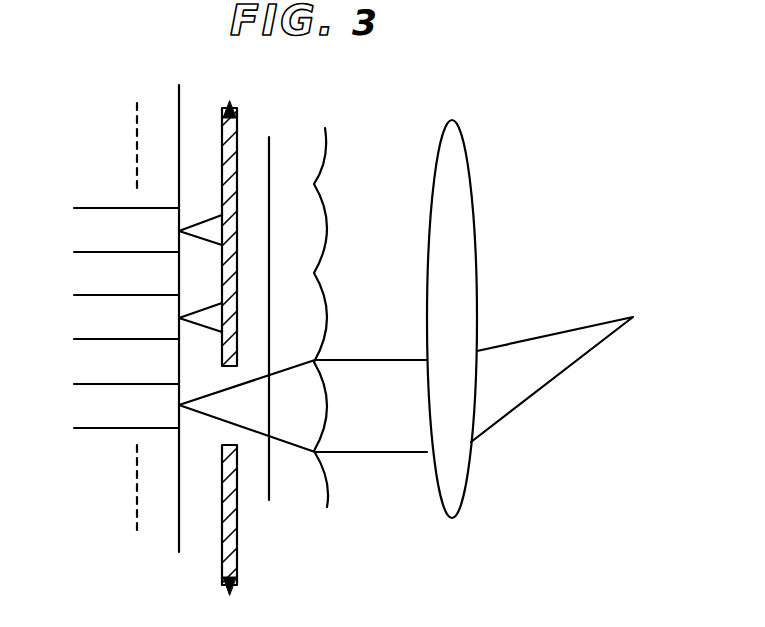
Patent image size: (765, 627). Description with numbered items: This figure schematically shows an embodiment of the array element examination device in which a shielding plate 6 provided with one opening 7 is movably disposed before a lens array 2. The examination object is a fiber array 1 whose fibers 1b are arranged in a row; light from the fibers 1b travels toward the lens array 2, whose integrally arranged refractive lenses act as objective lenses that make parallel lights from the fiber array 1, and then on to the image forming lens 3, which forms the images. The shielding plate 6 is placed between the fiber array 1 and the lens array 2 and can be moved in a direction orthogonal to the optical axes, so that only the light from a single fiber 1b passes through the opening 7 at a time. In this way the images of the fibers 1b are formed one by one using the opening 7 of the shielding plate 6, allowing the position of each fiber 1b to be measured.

The fiber array 1 is at (180, 128).
The fibers 1b is at (122, 217).
The lens array 2 is at (327, 148).
The image forming lens 3 is at (464, 157).
The shielding plate 6 is at (238, 137).
The opening 7 is at (217, 428).